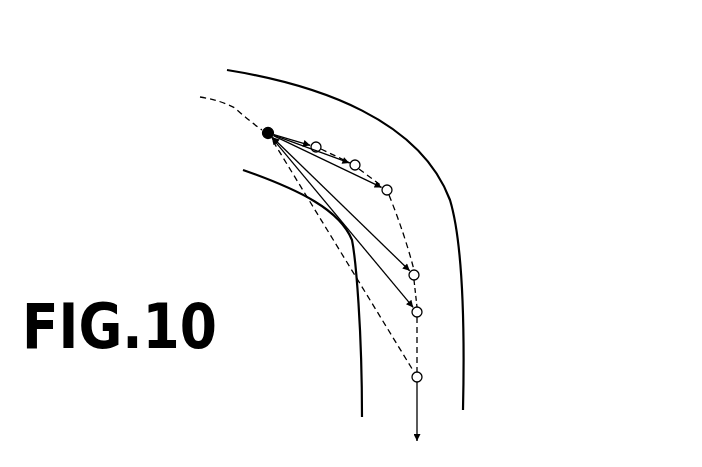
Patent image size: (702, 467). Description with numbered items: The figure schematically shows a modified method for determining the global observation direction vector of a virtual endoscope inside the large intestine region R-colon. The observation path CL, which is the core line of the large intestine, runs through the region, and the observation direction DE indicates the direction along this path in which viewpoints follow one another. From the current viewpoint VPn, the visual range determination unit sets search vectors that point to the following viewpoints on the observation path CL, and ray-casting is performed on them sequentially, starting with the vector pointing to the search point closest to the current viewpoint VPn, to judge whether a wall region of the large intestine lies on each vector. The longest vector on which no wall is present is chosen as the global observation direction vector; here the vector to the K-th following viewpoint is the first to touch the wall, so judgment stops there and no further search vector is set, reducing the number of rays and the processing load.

The large intestine region information R-colon is at (255, 90).
The observation path CL is at (288, 227).
The current viewpoint VPn is at (268, 132).
The observation direction DE is at (419, 432).